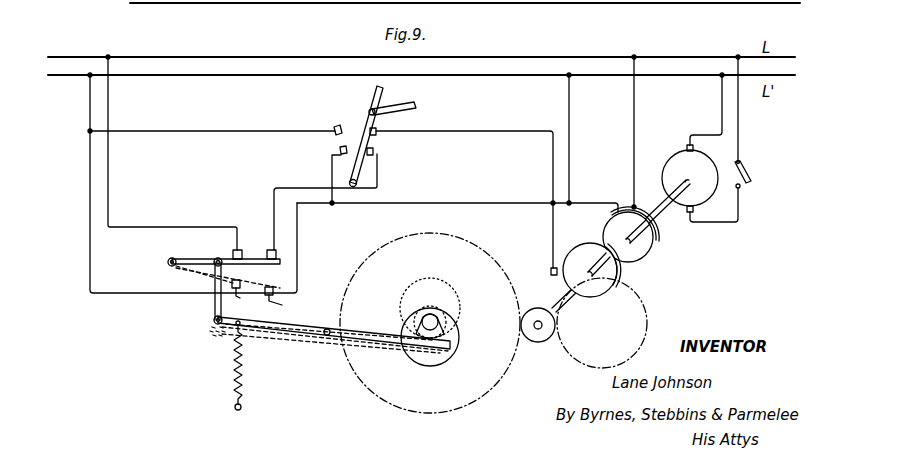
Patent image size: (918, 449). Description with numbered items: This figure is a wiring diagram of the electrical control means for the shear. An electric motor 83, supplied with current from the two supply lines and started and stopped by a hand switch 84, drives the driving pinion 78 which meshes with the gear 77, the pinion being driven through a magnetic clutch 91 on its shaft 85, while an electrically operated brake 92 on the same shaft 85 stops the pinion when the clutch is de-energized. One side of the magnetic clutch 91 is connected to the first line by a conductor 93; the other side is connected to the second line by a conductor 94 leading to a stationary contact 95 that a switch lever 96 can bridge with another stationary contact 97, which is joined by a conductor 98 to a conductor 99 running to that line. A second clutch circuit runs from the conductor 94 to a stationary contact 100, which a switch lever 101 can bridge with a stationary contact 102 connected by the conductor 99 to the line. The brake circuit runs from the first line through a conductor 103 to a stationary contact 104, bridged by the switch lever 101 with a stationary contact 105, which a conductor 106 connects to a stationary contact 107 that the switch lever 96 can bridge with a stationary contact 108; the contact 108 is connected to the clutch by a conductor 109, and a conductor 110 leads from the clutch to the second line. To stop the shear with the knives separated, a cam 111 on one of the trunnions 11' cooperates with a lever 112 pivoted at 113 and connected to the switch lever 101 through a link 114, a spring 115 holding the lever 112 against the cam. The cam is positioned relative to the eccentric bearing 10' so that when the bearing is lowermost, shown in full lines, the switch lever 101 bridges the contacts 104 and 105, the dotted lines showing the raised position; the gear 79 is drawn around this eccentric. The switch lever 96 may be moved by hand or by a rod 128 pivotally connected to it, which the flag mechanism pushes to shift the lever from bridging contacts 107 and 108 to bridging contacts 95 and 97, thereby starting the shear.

The conductor 103 is at (108, 100).
The conductor 99 is at (90, 103).
The conductor 98 is at (215, 131).
The stationary contact 97 is at (338, 127).
The switch lever 96 is at (376, 93).
The rod 128 is at (404, 106).
The stationary contact 108 is at (378, 131).
The stationary contact 107 is at (375, 151).
The stationary contact 95 is at (340, 150).
The conductor 94 is at (332, 161).
The conductor 106 is at (306, 185).
The conductor 109 is at (493, 131).
The conductor 110 is at (569, 108).
The conductor 93 is at (632, 120).
The electric motor 83 is at (680, 158).
The hand switch 84 is at (750, 172).
The shaft 85 is at (665, 214).
The magnetic clutch 91 is at (641, 252).
The electrically operated brake 92 is at (620, 272).
The gear 77 is at (648, 318).
The driving pinion 78 is at (540, 343).
The gear 79 is at (498, 382).
The eccentric bearing 10' is at (444, 338).
The trunnion 11' is at (452, 316).
The cam 111 is at (444, 331).
The lever 112 is at (393, 344).
The pivot 113 is at (327, 337).
The link 114 is at (214, 303).
The spring 115 is at (233, 379).
The switch lever 101 is at (191, 268).
The stationary contact 104 is at (233, 252).
The stationary contact 105 is at (268, 250).
The stationary contact 102 is at (240, 290).
The stationary contact 100 is at (274, 297).